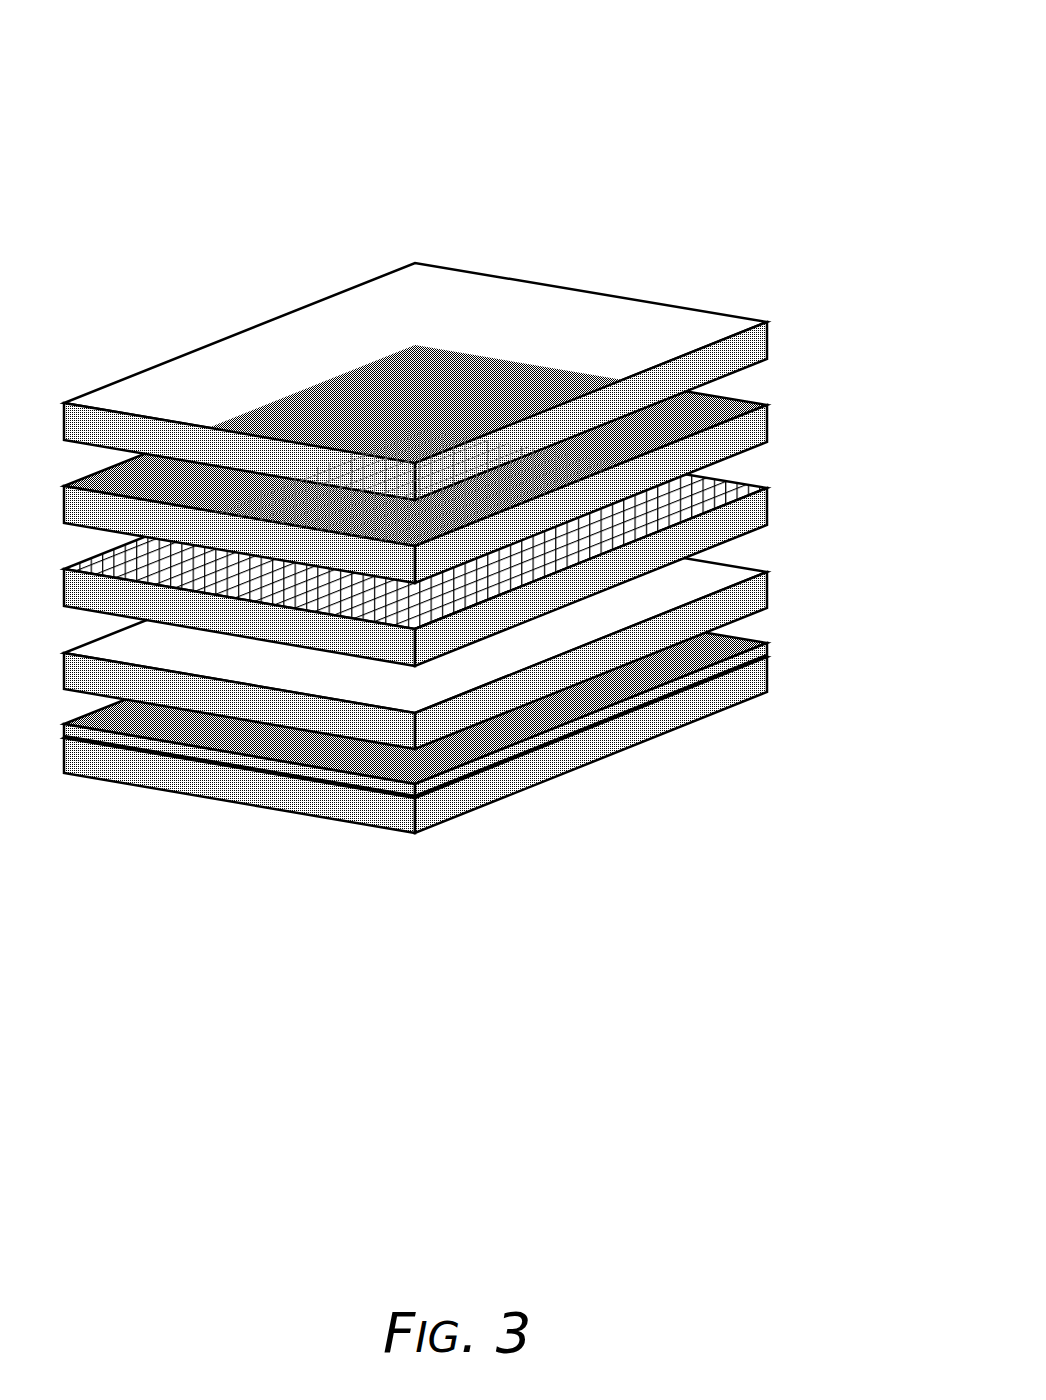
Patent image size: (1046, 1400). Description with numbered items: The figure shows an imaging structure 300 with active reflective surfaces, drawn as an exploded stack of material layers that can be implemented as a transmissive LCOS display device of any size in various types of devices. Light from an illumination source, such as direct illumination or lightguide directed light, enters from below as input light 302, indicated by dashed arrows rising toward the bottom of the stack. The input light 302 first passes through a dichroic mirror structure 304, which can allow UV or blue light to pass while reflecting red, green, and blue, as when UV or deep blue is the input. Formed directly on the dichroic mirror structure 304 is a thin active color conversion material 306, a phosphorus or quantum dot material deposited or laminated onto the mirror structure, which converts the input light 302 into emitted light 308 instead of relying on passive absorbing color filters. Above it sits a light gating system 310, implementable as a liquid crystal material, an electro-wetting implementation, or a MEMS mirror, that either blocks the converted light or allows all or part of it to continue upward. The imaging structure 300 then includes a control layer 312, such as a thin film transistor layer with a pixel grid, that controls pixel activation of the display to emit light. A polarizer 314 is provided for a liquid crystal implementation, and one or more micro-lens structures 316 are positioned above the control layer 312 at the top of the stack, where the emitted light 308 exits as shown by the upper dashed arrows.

The imaging structure 300 is at (690, 68).
The input light 302 is at (521, 854).
The dichroic mirror structure 304 is at (755, 678).
The active color conversion material 306 is at (762, 650).
The emitted light 308 is at (511, 383).
The light gating system 310 is at (755, 597).
The control layer 312 is at (755, 513).
The polarizer 314 is at (755, 432).
The micro-lens structures 316 is at (755, 350).